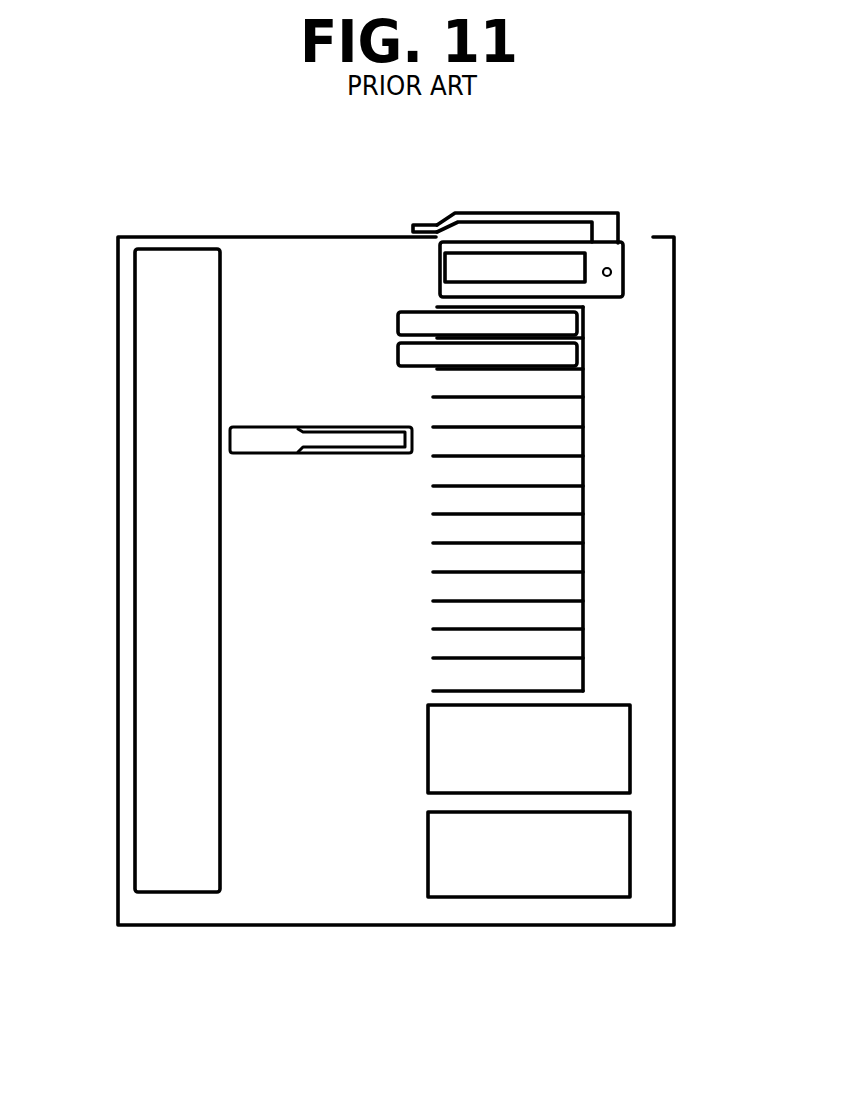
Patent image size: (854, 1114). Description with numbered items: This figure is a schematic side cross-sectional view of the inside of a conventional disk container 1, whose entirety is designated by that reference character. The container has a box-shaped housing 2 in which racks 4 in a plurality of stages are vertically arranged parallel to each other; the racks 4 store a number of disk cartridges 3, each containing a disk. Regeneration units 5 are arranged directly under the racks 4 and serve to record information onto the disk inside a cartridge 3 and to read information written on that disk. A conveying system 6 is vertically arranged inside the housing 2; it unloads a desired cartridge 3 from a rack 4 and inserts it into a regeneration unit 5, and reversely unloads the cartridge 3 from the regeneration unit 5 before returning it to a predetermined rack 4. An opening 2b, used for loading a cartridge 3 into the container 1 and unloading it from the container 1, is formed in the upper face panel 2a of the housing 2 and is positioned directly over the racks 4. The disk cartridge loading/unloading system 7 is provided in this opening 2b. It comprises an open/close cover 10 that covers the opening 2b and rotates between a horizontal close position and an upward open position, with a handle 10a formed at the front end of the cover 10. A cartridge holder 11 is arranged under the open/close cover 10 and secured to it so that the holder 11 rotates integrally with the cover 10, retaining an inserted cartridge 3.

The container 1 is at (373, 523).
The housing 2 is at (119, 325).
The upper face panel 2a is at (313, 236).
The opening 2b is at (636, 242).
The disk cartridge 3 is at (399, 318).
The racks 4 is at (583, 419).
The regeneration units 5 is at (630, 752).
The conveying system 6 is at (145, 463).
The disk cartridge loading/unloading system 7 is at (542, 199).
The open/close cover 10 is at (515, 185).
The handle 10a is at (428, 226).
The cartridge holder 11 is at (555, 240).